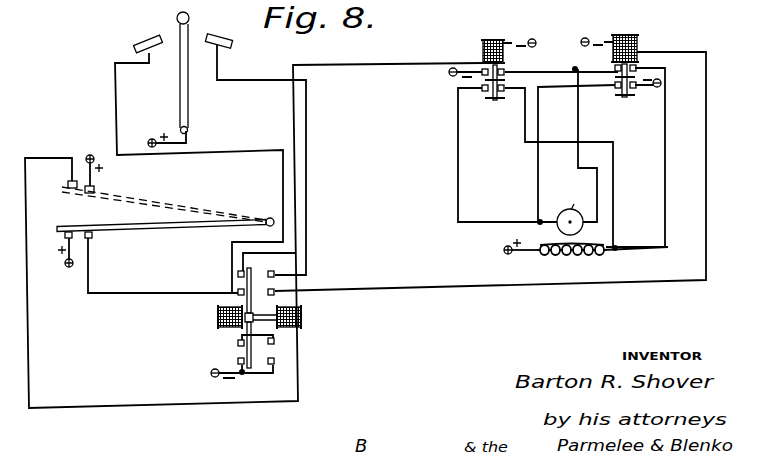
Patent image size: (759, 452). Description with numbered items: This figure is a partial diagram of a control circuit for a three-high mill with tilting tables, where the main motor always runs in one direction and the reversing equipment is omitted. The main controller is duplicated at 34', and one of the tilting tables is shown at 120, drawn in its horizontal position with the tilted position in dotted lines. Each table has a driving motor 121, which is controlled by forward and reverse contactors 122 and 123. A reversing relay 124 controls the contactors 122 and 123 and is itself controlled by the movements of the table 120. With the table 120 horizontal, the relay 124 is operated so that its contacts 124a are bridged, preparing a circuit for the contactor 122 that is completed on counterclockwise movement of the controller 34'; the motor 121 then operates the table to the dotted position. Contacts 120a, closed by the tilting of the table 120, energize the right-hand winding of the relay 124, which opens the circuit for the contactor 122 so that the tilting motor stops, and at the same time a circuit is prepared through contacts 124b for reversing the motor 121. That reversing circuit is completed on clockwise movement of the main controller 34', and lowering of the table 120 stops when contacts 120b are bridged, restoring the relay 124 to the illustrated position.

The main controller 34' is at (205, 73).
The tilting table 120 is at (193, 225).
The contacts 120a is at (88, 186).
The contacts 120b is at (88, 238).
The driving motor 121 is at (560, 201).
The forward contactor 122 is at (470, 48).
The reverse contactor 123 is at (637, 50).
The reversing relay 124 is at (267, 311).
The relay contacts 124a is at (238, 277).
The relay contacts 124b is at (277, 292).